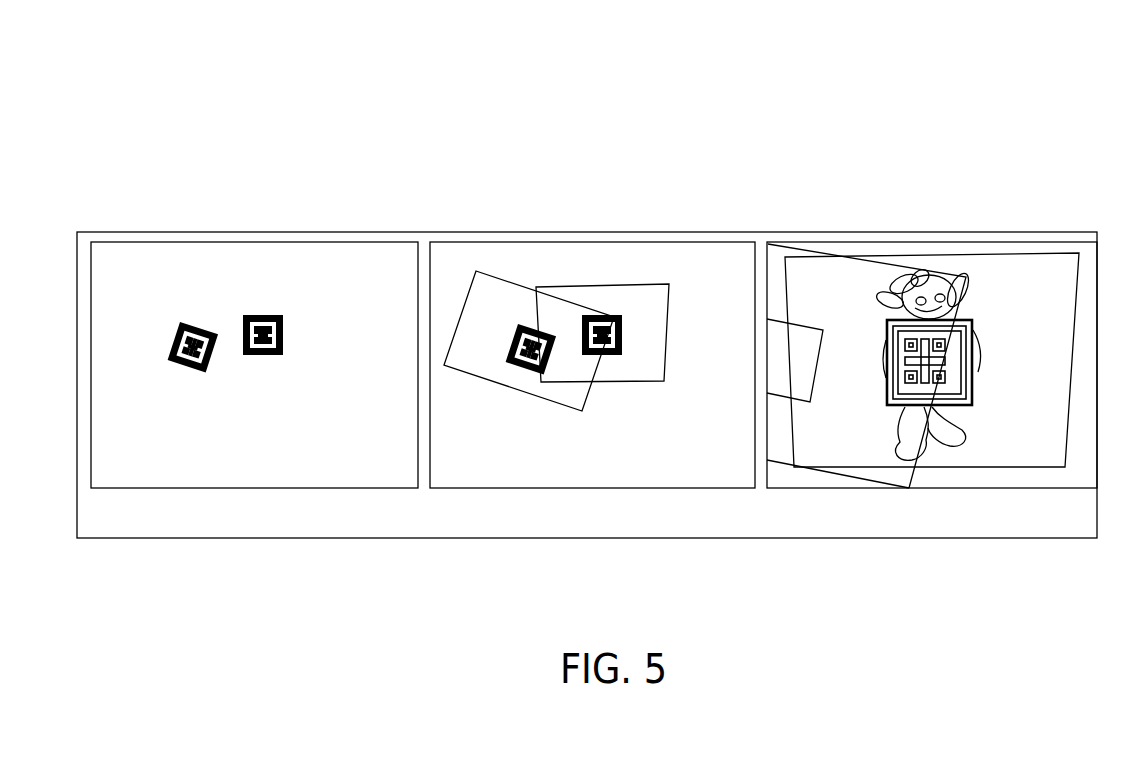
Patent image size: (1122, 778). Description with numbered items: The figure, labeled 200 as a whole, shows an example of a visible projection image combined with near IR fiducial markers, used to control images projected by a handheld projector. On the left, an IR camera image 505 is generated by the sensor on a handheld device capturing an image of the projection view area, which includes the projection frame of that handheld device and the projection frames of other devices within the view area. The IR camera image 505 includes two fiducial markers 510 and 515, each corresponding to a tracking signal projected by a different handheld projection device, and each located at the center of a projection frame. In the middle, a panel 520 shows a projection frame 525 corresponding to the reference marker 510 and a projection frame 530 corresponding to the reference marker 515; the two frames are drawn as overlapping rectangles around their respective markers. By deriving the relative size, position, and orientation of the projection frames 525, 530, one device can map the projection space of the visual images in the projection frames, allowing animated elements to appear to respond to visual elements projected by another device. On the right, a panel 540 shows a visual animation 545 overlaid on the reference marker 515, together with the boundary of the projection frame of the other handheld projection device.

The image processing system display 200 is at (1027, 53).
The IR camera image 505 is at (293, 240).
The fiducial marker 510 is at (187, 368).
The fiducial marker 515 is at (272, 357).
The panel 520 is at (580, 240).
The projection frame 525 is at (480, 380).
The projection frame 530 is at (628, 383).
The panel 540 is at (878, 232).
The visual animation 545 is at (985, 273).